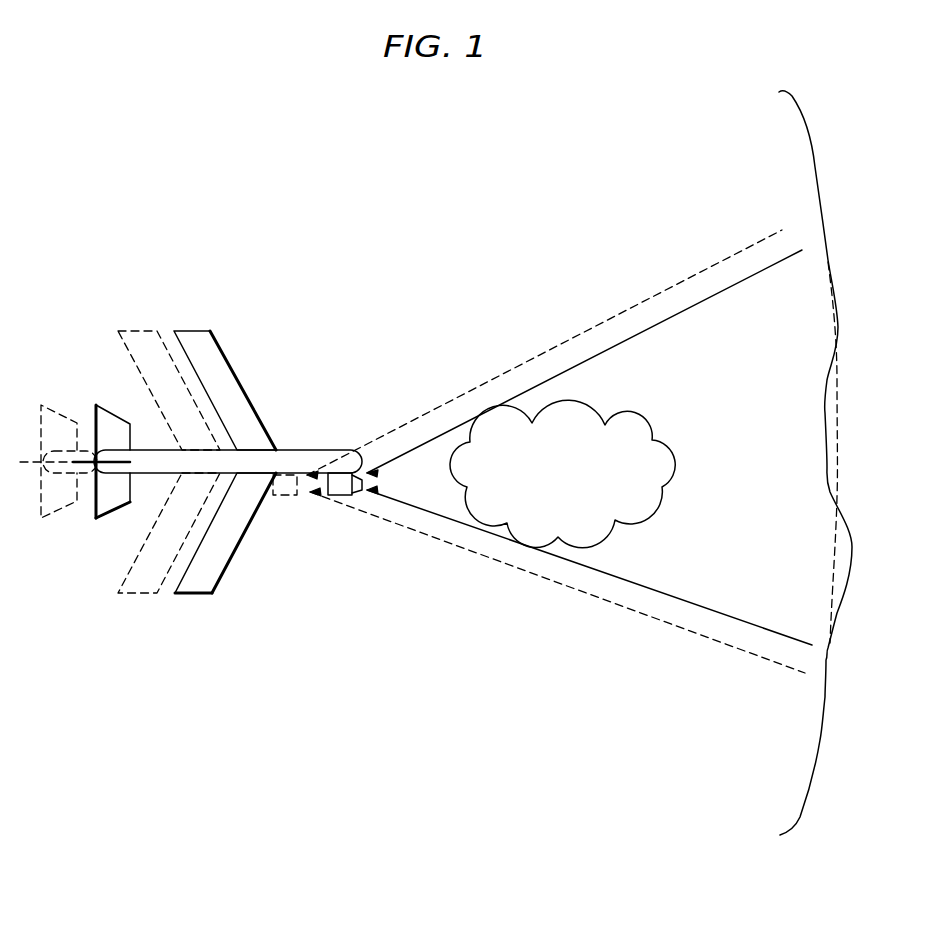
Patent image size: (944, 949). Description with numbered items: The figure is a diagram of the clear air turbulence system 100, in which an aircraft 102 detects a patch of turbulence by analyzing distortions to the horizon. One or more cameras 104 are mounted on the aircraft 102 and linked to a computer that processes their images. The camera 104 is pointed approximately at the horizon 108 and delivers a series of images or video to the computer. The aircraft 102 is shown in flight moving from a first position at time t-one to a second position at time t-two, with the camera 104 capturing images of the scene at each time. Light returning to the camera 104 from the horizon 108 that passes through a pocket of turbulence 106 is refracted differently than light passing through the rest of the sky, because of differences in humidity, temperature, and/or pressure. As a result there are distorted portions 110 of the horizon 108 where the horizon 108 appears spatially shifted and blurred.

The clear air turbulence system 100 is at (104, 218).
The aircraft 102 is at (193, 593).
The camera 104 is at (339, 495).
The pocket of turbulence 106 is at (642, 418).
The horizon 108 is at (815, 167).
The distorted portions 110 is at (748, 476).